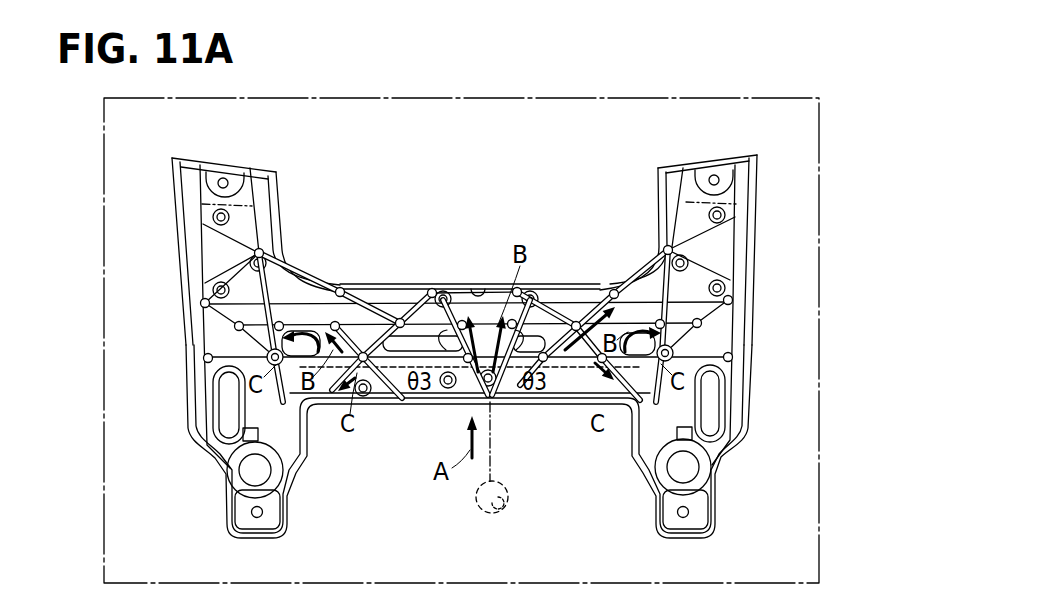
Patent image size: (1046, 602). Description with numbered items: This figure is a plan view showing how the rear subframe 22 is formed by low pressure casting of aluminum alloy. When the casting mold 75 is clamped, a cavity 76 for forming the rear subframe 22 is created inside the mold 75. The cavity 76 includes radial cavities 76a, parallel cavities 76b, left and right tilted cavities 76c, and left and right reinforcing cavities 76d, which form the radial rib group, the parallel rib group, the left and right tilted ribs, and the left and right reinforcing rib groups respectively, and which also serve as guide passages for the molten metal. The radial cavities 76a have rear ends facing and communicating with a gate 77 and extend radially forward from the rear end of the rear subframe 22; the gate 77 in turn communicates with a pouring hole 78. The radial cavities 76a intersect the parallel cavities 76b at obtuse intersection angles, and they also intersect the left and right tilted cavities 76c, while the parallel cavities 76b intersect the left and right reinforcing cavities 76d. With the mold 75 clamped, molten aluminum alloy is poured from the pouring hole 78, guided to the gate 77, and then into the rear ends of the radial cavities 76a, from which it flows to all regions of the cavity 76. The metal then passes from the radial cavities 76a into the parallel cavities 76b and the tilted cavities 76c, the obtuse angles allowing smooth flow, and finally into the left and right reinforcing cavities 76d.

The casting mold 75 is at (520, 96).
The rear subframe 22 is at (772, 196).
The cavity 76 is at (474, 290).
The radial cavities 76a is at (470, 375).
The parallel cavities 76b is at (555, 370).
The left and right tilted cavities 76c is at (617, 458).
The left and right reinforcing cavities 76d is at (237, 355).
The gate 77 is at (493, 432).
The pouring hole 78 is at (503, 512).